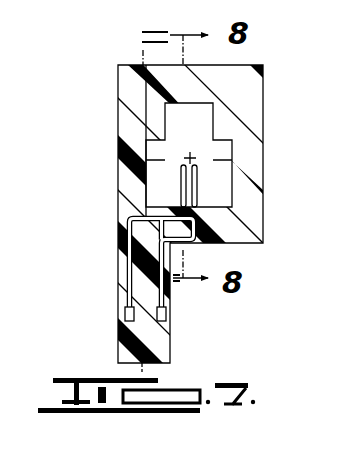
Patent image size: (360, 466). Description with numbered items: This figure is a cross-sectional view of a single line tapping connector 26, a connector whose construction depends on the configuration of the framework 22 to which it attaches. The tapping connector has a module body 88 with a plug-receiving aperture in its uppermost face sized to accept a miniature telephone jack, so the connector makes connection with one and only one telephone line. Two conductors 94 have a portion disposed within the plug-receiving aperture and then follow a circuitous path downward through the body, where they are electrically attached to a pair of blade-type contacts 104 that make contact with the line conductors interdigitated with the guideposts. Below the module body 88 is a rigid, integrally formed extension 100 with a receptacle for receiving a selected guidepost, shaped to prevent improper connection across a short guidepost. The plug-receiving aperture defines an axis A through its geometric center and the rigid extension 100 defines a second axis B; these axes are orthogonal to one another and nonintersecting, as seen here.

The framework 22 is at (10, 8).
The single line tapping connector 26 is at (272, 70).
The module body 88 is at (256, 124).
The conductors 94 is at (197, 180).
The rigid extension 100 is at (163, 341).
The blade-type contacts 104 is at (126, 310).
The axis A is at (191, 152).
The second axis B is at (120, 337).